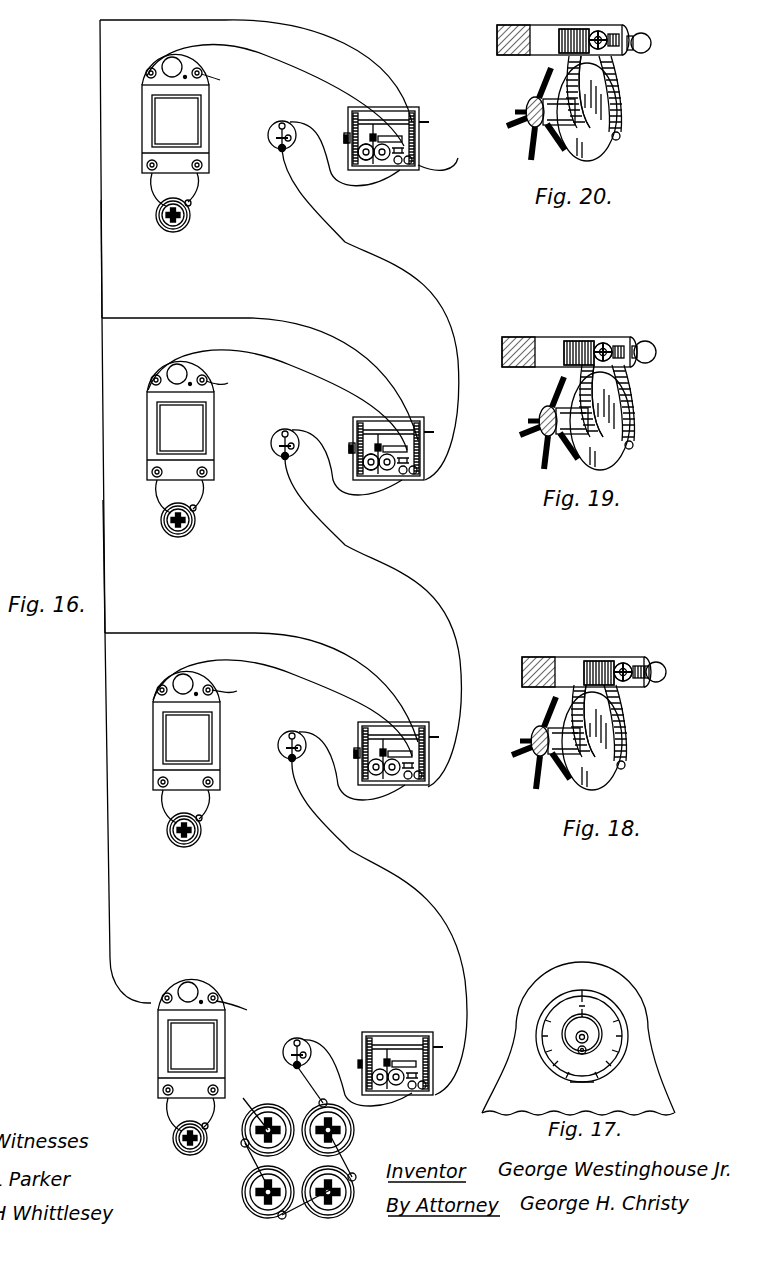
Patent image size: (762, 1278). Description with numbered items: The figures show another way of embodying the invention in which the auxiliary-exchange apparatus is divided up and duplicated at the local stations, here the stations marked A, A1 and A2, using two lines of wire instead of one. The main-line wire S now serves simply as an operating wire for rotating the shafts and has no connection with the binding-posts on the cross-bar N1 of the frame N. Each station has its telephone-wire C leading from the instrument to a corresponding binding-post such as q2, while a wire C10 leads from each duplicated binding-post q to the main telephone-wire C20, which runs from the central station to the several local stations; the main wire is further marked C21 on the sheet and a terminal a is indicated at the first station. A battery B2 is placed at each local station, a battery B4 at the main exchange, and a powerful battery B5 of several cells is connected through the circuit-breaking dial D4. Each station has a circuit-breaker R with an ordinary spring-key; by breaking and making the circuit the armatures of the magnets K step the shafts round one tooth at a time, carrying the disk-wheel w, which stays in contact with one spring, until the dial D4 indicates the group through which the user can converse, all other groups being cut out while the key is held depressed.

In FIG. 16, the local station A is at (200, 901).
In FIG. 16, the local station A1 is at (187, 437).
In FIG. 16, the local station A2 is at (175, 130).
In FIG. 16, the binding post a is at (215, 81).
In FIG. 16, the battery B2 is at (189, 522).
In FIG. 16, the battery B4 is at (190, 1146).
In FIG. 16, the powerful battery B5 is at (298, 1142).
In FIG. 16, the circuit-breaker R is at (280, 595).
In FIG. 16, the frame N is at (393, 591).
In FIG. 20, the top bar or rail N1 is at (552, 40).
In FIG. 19, the top bar or rail N1 is at (567, 342).
In FIG. 18, the top bar or rail N1 is at (586, 660).
In FIG. 16, the circuit-breaking dial D4 is at (345, 137).
In FIG. 17, the circuit-breaking dial D4 is at (593, 1036).
In FIG. 16, the magnet K is at (357, 158).
In FIG. 16, the main-line wire S is at (374, 622).
In FIG. 16, the telephone-wire C is at (279, 400).
In FIG. 20, the telephone-wire C is at (591, 29).
In FIG. 19, the telephone-wire C is at (593, 341).
In FIG. 18, the telephone-wire C is at (603, 661).
In FIG. 16, the wire C10 is at (259, 372).
In FIG. 20, the wire C10 is at (609, 33).
In FIG. 19, the wire C10 is at (615, 345).
In FIG. 18, the wire C10 is at (627, 663).
In FIG. 16, the main telephone-wire C20 is at (116, 566).
In FIG. 16, the main circuit wire C21 is at (112, 259).
In FIG. 20, the binding-post q is at (640, 58).
In FIG. 19, the binding-post q is at (646, 368).
In FIG. 18, the binding-post q is at (654, 688).
In FIG. 20, the binding-post q2 is at (569, 56).
In FIG. 19, the binding-post q2 is at (576, 369).
In FIG. 18, the binding-post q2 is at (578, 697).
In FIG. 20, the disk-wheel w is at (564, 108).
In FIG. 19, the disk-wheel w is at (577, 417).
In FIG. 18, the disk-wheel w is at (569, 737).